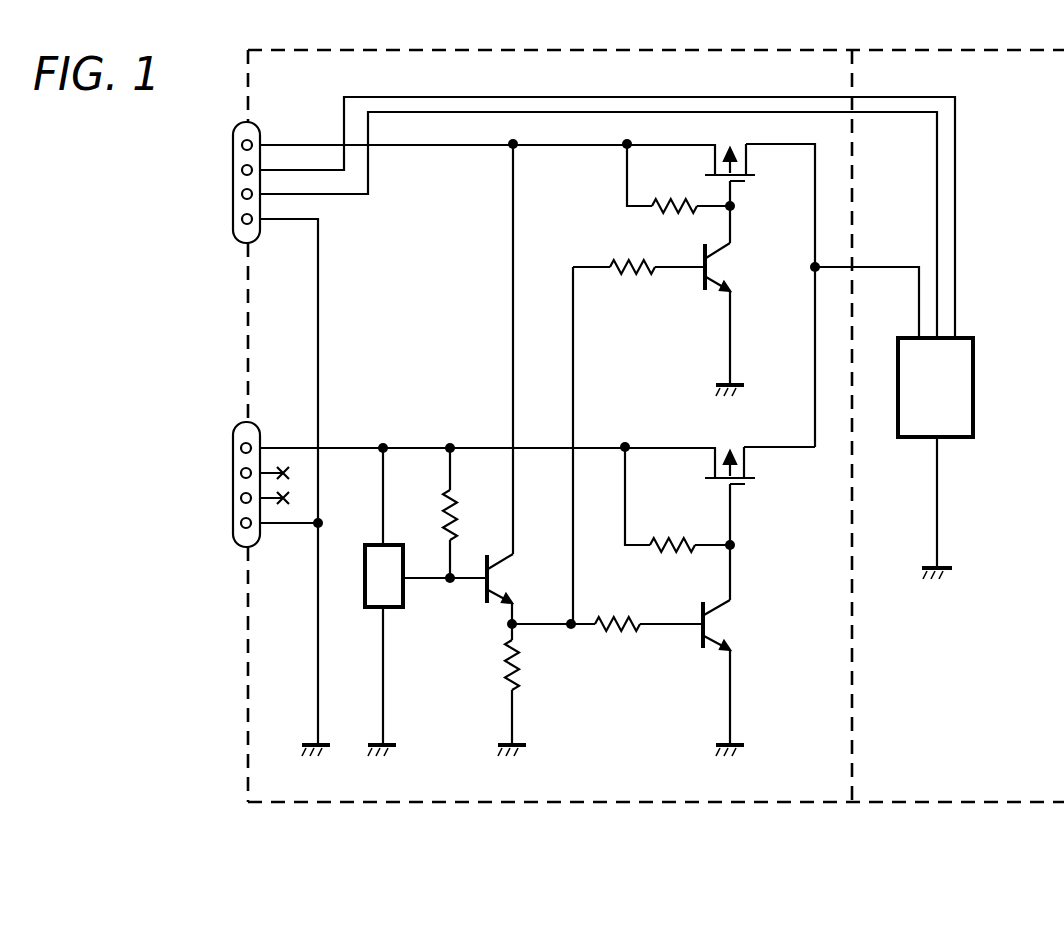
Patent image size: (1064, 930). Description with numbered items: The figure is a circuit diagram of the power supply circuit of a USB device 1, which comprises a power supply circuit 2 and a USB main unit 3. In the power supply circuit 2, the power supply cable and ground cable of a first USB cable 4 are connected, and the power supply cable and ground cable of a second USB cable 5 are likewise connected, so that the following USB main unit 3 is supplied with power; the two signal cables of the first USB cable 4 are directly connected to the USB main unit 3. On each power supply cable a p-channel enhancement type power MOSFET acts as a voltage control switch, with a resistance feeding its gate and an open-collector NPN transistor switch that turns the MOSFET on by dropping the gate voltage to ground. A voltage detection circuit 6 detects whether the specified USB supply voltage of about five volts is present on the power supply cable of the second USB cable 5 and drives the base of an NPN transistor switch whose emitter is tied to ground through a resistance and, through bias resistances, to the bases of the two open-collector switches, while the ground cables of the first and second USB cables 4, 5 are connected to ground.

The USB device 1 is at (656, 446).
The power supply circuit 2 is at (603, 426).
The USB main unit 3 is at (973, 380).
The first USB cable 4 is at (233, 163).
The second USB cable 5 is at (233, 497).
The voltage detection circuit 6 is at (395, 607).